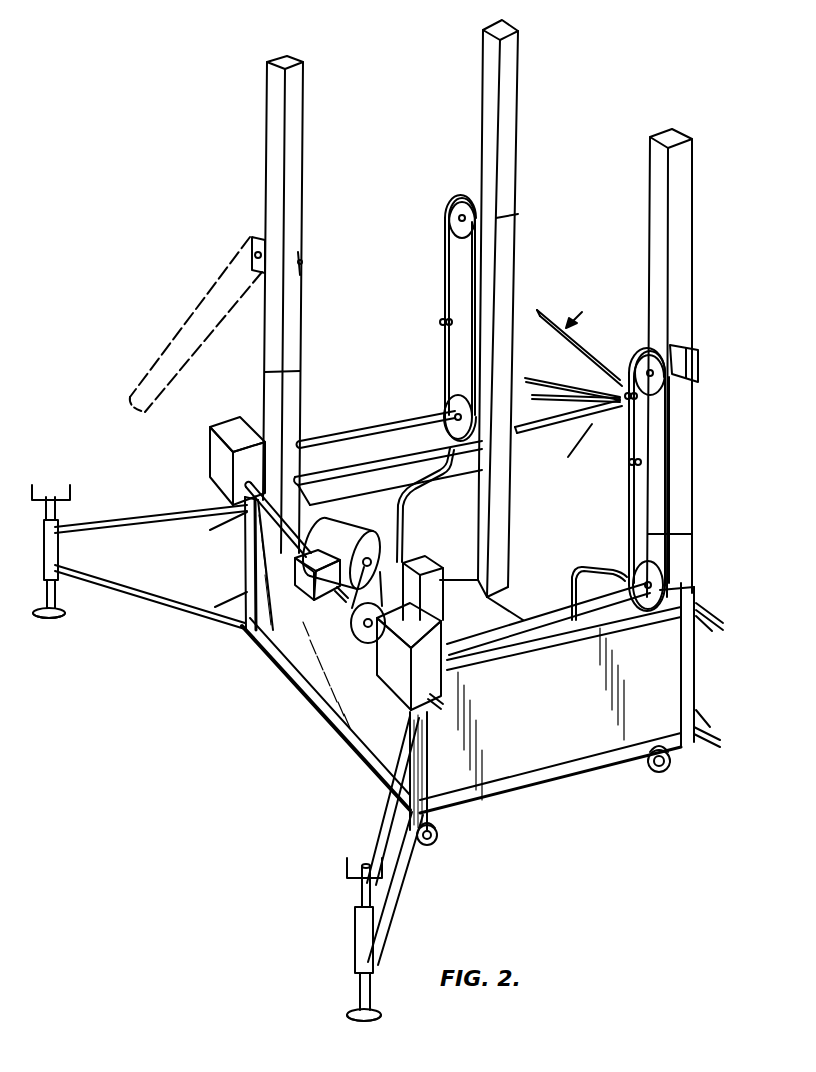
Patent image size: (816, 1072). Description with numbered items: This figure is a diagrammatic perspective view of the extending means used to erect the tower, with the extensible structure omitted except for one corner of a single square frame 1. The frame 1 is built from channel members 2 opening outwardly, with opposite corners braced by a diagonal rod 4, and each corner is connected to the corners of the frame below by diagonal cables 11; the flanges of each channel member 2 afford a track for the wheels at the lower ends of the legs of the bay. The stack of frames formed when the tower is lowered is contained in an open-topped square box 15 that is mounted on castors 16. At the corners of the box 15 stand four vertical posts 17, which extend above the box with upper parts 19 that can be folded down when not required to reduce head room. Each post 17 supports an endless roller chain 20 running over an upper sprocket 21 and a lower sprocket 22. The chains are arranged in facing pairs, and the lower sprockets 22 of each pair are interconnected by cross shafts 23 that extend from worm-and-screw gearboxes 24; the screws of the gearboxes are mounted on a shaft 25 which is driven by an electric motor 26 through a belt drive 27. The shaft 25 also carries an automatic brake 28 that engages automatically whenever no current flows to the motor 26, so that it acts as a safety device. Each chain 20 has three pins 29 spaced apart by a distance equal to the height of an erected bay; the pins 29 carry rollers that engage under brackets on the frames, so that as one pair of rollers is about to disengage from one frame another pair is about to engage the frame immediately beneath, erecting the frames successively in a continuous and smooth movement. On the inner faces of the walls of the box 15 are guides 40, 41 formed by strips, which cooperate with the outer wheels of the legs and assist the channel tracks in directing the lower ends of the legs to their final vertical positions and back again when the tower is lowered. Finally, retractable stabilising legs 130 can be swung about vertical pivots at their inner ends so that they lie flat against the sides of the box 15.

The square frame 1 is at (580, 310).
The channel member 2 is at (589, 349).
The diagonal rod 4 is at (535, 376).
The diagonal cable 11 is at (551, 386).
The open-topped square box 15 is at (566, 758).
The castor 16 is at (665, 770).
The vertical post 17 is at (283, 326).
The upper part of post 19 is at (214, 302).
The endless roller chain 20 is at (265, 372).
The upper sprocket 21 is at (676, 350).
The lower sprocket 22 is at (590, 580).
The cross shaft 23 is at (368, 432).
The worm-and-screw gearbox 24 is at (215, 470).
The shaft 25 is at (252, 535).
The electric motor 26 is at (326, 543).
The belt drive 27 is at (353, 605).
The automatic brake 28 is at (318, 600).
The pin 29 is at (636, 401).
The guide 40 is at (328, 496).
The guide 41 is at (413, 503).
The stabilising leg 130 is at (160, 598).